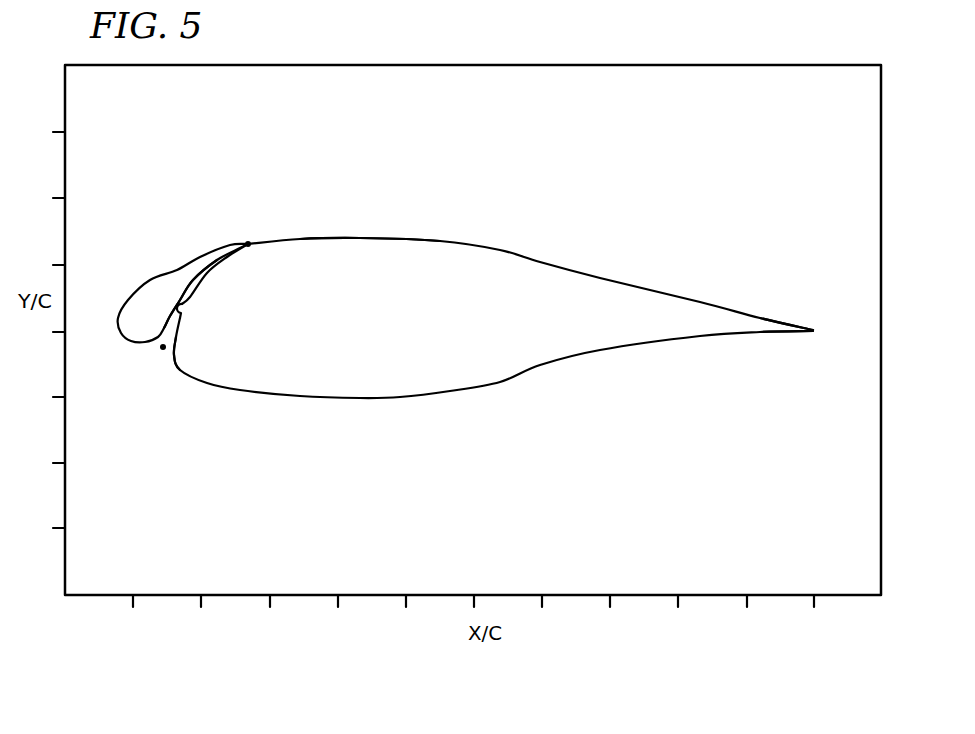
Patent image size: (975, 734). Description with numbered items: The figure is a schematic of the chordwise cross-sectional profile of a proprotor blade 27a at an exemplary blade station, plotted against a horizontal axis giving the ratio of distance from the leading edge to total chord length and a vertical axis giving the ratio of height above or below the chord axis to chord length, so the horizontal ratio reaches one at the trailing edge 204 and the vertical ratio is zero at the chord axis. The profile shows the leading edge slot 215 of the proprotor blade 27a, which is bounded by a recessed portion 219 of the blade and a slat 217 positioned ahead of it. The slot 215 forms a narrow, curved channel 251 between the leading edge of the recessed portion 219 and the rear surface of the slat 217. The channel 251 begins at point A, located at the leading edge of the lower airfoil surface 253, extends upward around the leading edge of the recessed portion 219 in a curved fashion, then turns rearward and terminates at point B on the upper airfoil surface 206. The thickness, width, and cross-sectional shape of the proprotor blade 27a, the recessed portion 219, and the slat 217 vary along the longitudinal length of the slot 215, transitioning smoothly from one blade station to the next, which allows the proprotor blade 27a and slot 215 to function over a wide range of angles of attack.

The proprotor blade 27a is at (536, 247).
The upper airfoil surface 206 is at (360, 237).
The trailing edge 204 is at (816, 329).
The lower airfoil surface 253 is at (270, 395).
The recessed portion 219 is at (186, 308).
The slat 217 is at (145, 282).
The channel 251 is at (188, 284).
The leading edge slot 215 is at (163, 371).
The point A is at (157, 349).
The point B is at (249, 242).